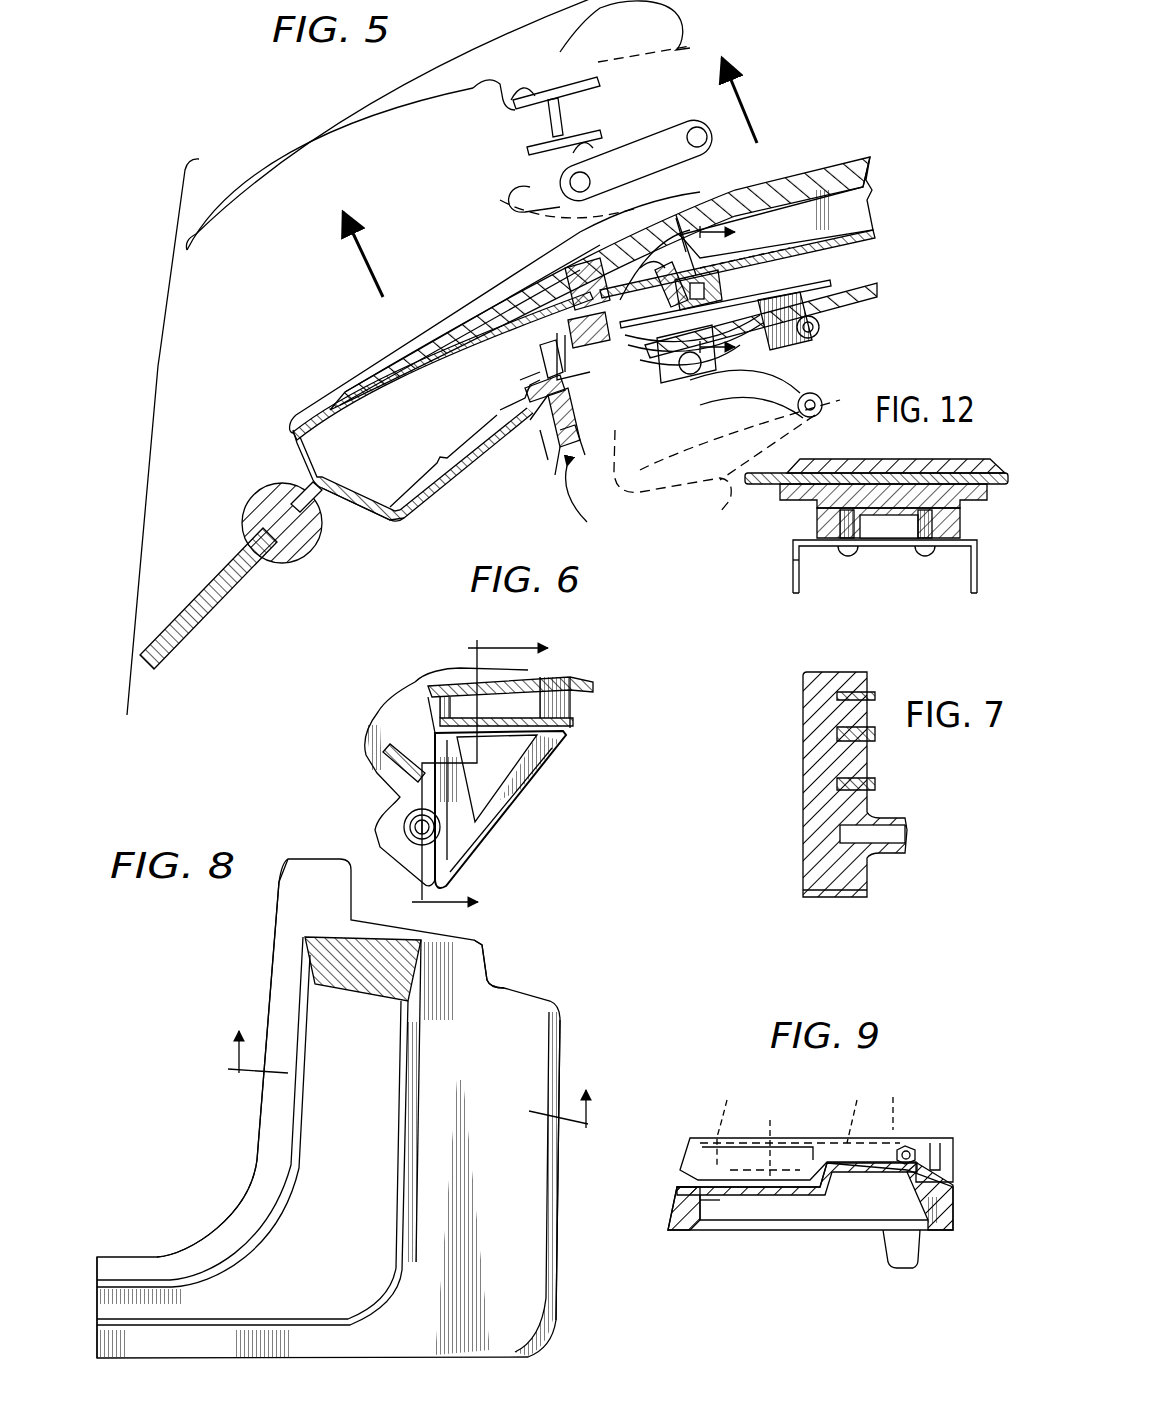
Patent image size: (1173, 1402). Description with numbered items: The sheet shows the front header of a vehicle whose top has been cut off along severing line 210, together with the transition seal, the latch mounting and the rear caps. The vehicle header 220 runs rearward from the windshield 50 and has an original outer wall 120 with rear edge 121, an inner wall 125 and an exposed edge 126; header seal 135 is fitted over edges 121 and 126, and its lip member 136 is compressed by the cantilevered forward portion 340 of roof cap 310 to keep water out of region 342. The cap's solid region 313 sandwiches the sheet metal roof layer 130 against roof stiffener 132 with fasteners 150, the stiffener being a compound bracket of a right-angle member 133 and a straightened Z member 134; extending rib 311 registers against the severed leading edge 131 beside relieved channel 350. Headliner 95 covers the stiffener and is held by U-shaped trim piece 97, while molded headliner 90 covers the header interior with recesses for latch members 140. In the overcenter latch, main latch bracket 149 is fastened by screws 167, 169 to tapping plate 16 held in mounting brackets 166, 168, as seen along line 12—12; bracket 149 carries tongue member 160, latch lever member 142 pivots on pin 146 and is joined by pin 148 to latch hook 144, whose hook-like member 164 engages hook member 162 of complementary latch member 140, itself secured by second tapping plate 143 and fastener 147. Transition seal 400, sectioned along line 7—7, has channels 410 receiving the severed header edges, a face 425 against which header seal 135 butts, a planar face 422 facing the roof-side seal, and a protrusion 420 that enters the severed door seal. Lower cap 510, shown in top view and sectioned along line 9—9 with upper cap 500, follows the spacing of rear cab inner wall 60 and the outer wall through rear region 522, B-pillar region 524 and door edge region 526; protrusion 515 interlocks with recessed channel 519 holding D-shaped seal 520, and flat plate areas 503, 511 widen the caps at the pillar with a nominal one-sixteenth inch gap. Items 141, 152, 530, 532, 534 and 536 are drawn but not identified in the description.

In FIG. 6, the section line 7— 7 is at (493, 776).
In FIG. 8, the section line 9— 9 is at (410, 1063).
In FIG. 5, the section line 12— 12 is at (723, 289).
In FIG. 12, the tapping plate 16 is at (828, 548).
In FIG. 5, the windshield 50 is at (218, 560).
In FIG. 5, the rear cab inner wall 60 is at (285, 478).
In FIG. 5, the molded headliner 90 is at (463, 487).
In FIG. 5, the original vehicle headliner 95 is at (868, 300).
In FIG. 5, the U-shaped trim piece 97 is at (530, 390).
In FIG. 5, the outer wall of vehicle header 120 is at (333, 417).
In FIG. 5, the rear edge of roof header 121 is at (510, 280).
In FIG. 5, the inner wall of header 125 is at (390, 500).
In FIG. 5, the exposed edge of header 126 is at (545, 358).
In FIG. 5, the sheet metal roof layer 130 is at (840, 244).
In FIG. 12, the sheet metal roof layer 130 is at (1000, 472).
In FIG. 5, the leading edge of roof 131 is at (640, 262).
In FIG. 5, the roof stiffener 132 is at (730, 262).
In FIG. 12, the roof stiffener 132 is at (777, 490).
In FIG. 5, the right-angle member 133 is at (660, 292).
In FIG. 5, the Z member 134 is at (745, 290).
In FIG. 5, the header seal 135 is at (570, 322).
In FIG. 5, the lip member 136 is at (575, 270).
In FIG. 5, the complementary latch member 140 is at (550, 450).
In FIG. 5, the latch plate 141 is at (500, 398).
In FIG. 5, the latch lever member 142 is at (800, 350).
In FIG. 5, the second tapping plate 143 is at (505, 410).
In FIG. 5, the latch hook 144 is at (722, 500).
In FIG. 5, the pin 146 is at (745, 375).
In FIG. 5, the fastener 147 is at (545, 448).
In FIG. 5, the pin 148 is at (820, 330).
In FIG. 5, the main latch bracket 149 is at (700, 378).
In FIG. 12, the main latch bracket 149 is at (795, 565).
In FIG. 5, the fasteners 150 is at (733, 212).
In FIG. 5, the hinge block 152 is at (722, 295).
In FIG. 5, the tongue member 160 is at (706, 388).
In FIG. 6, the tongue member 160 is at (430, 700).
In FIG. 5, the hook member 162 is at (650, 360).
In FIG. 5, the hook-like member 164 is at (495, 200).
In FIG. 12, the mounting bracket 166 is at (818, 518).
In FIG. 12, the screw 167 is at (848, 556).
In FIG. 12, the mounting bracket 168 is at (825, 532).
In FIG. 12, the screw 169 is at (925, 556).
In FIG. 5, the severing line 210 is at (583, 412).
In FIG. 5, the vehicle header 220 is at (594, 500).
In FIG. 5, the roof cap 310 is at (415, 315).
In FIG. 12, the roof cap 310 is at (862, 462).
In FIG. 5, the extending rib 311 is at (585, 262).
In FIG. 5, the solid region 313 is at (690, 215).
In FIG. 5, the cantilevered forward portion 340 is at (540, 262).
In FIG. 5, the region 342 is at (445, 348).
In FIG. 5, the relieved channel 350 is at (650, 240).
In FIG. 6, the transition seal 400 is at (370, 725).
In FIG. 7, the transition seal 400 is at (825, 668).
In FIG. 6, the channels 410 is at (450, 684).
In FIG. 6, the protrusion 420 is at (405, 828).
In FIG. 7, the protrusion 420 is at (882, 816).
In FIG. 7, the planar face 422 is at (803, 767).
In FIG. 6, the face 425 is at (575, 740).
In FIG. 8, the upper cap 500 is at (328, 1108).
In FIG. 9, the upper cap 500 is at (683, 1167).
In FIG. 9, the flat plate area 503 is at (768, 1135).
In FIG. 8, the lower cap 510 is at (233, 1118).
In FIG. 9, the lower cap 510 is at (673, 1210).
In FIG. 9, the flat plate area 511 is at (782, 1195).
In FIG. 9, the protrusion 515 is at (860, 1180).
In FIG. 9, the recessed channel 519 is at (880, 1098).
In FIG. 8, the D-shaped seal 520 is at (232, 1218).
In FIG. 9, the D-shaped seal 520 is at (910, 1150).
In FIG. 8, the rear region 522 is at (115, 1255).
In FIG. 8, the B-pillar region 524 is at (559, 1154).
In FIG. 8, the door edge region 526 is at (505, 970).
In FIG. 9, the lip 530 is at (707, 1120).
In FIG. 9, the recess 532 is at (740, 1187).
In FIG. 9, the retainer 534 is at (905, 1148).
In FIG. 9, the step 536 is at (837, 1108).